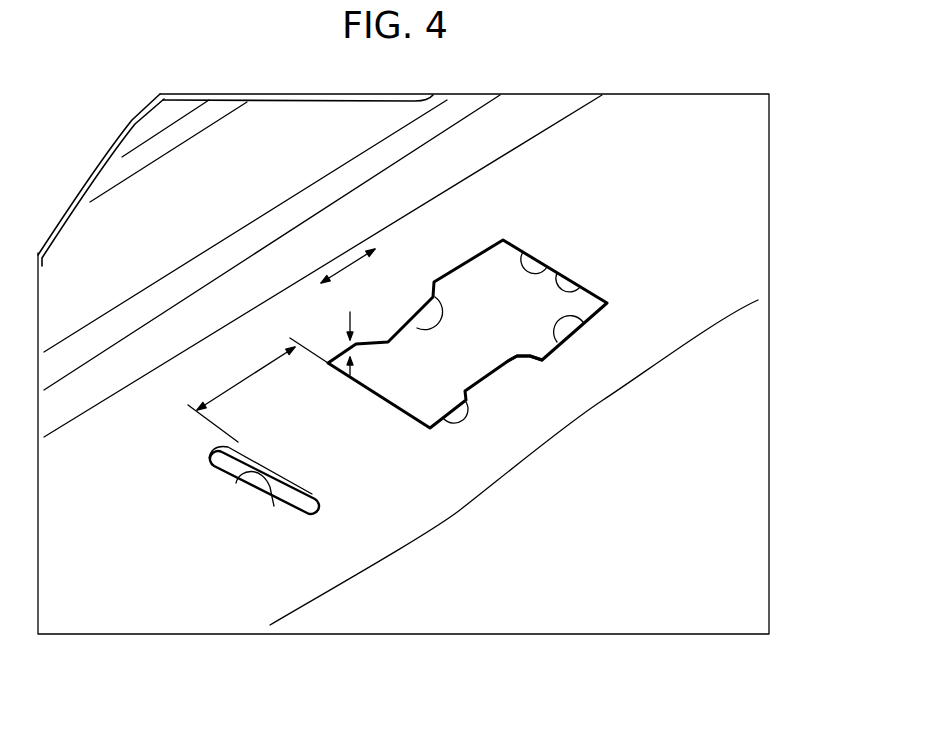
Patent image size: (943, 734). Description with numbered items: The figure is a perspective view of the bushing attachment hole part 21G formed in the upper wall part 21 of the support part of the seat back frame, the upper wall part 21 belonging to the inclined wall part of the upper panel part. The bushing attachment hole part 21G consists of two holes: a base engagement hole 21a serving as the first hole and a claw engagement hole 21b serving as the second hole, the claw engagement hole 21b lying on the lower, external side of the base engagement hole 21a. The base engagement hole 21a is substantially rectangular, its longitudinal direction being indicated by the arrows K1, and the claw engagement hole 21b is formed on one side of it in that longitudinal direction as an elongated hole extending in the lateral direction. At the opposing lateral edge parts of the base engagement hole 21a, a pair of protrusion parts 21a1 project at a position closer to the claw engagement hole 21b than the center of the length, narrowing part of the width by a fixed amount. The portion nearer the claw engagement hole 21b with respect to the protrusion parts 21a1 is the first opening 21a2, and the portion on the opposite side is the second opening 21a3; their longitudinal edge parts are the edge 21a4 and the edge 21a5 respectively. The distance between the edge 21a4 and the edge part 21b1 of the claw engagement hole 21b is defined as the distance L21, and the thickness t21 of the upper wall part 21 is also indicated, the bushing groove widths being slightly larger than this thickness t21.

The upper wall part 21 is at (607, 250).
The base engagement hole 21a is at (527, 252).
The protrusion parts 21a1 is at (433, 288).
The first opening 21a2 is at (467, 400).
The second opening 21a3 is at (573, 317).
The edge 21a4 is at (380, 393).
The edge 21a5 is at (585, 300).
The claw engagement hole 21b is at (236, 484).
The edge part 21b1 is at (298, 490).
The bushing attachment hole part 21G is at (413, 560).
The distance L21 is at (258, 390).
The longitudinal direction K1 is at (351, 268).
The thickness t21 is at (370, 341).